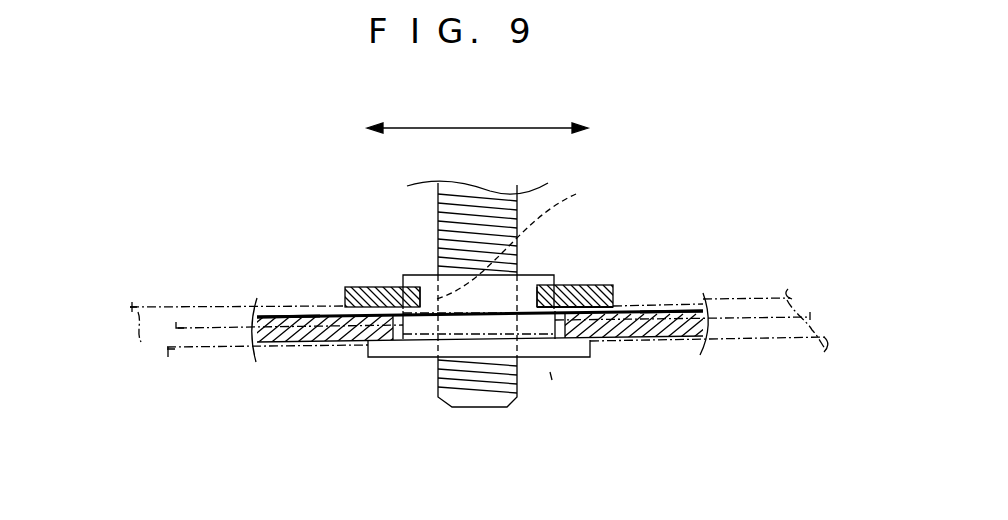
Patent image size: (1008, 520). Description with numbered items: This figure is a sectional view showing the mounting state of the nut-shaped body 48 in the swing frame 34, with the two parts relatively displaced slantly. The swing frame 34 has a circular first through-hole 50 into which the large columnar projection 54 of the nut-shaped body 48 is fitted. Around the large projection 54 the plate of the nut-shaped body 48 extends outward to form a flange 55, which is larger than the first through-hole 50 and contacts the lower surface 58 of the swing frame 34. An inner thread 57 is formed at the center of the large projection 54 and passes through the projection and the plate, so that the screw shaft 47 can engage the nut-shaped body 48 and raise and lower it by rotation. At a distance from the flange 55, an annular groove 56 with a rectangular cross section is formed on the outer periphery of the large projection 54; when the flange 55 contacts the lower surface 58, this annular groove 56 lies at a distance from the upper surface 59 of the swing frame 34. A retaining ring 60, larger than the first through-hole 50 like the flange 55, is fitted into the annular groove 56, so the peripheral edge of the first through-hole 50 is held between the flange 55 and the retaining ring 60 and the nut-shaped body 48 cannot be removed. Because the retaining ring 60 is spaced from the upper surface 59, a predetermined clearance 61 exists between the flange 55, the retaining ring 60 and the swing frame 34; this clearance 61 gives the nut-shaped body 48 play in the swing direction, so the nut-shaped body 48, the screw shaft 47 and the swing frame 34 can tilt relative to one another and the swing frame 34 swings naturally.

The swing frame 34 is at (758, 408).
The screw shaft 47 is at (487, 407).
The nut-shaped body 48 is at (552, 378).
The first through-hole 50 is at (388, 285).
The large columnar projection 54 is at (420, 327).
The flange 55 is at (363, 350).
The annular groove 56 is at (560, 285).
The inner thread 57 is at (521, 240).
The lower surface 58 is at (277, 340).
The upper surface 59 is at (307, 317).
The retaining ring 60 is at (616, 303).
The clearance 61 is at (693, 308).